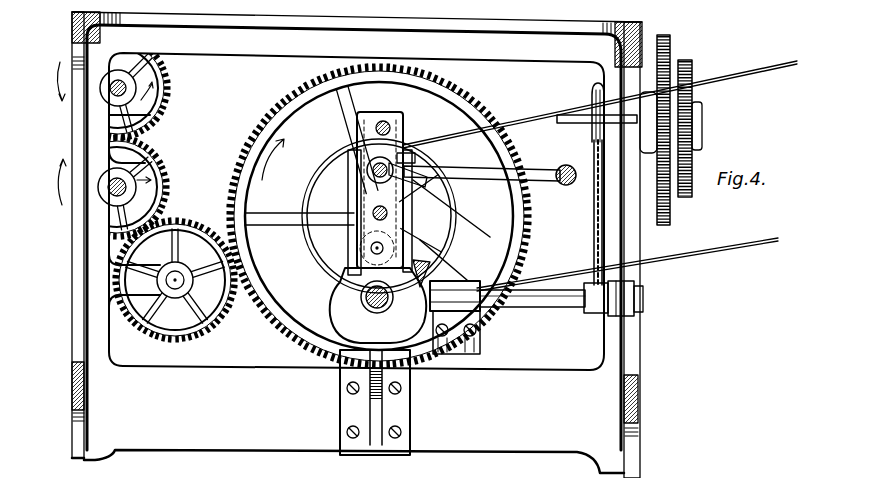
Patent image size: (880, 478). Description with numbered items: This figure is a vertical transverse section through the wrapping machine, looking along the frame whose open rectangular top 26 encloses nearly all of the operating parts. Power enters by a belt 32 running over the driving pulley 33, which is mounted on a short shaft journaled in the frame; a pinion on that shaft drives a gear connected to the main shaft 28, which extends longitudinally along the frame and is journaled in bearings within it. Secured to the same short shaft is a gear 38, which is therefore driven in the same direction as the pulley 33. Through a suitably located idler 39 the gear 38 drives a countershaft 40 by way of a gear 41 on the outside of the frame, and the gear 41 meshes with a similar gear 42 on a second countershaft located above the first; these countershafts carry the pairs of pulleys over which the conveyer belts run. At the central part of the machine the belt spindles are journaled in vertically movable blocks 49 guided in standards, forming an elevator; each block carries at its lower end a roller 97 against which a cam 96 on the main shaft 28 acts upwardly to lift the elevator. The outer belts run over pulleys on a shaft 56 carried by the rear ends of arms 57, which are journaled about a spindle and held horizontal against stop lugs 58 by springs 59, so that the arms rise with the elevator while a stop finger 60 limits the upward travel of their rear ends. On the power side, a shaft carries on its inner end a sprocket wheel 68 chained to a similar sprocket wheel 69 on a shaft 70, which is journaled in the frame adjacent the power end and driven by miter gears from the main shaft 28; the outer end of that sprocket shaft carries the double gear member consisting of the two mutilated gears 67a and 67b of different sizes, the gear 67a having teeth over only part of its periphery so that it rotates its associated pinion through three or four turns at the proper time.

The open rectangular top 26 is at (343, 245).
The gear 41 is at (158, 156).
The countershaft 40 is at (124, 188).
The idler 39 is at (213, 318).
The gear 38 is at (262, 222).
The driving pulley 33 is at (446, 246).
The vertically movable blocks 49 is at (362, 146).
The stop lugs 58 is at (404, 142).
The roller 97 is at (362, 250).
The springs 59 is at (422, 178).
The arms 57 is at (482, 178).
The shaft 56 is at (567, 186).
The mutilated gear 67b is at (690, 68).
The mutilated gear 67a is at (669, 214).
The stop finger 60 is at (560, 116).
The sprocket wheel 68 is at (595, 95).
The sprocket wheel 69 is at (592, 330).
The shaft 70 is at (550, 300).
The belt 32 is at (686, 255).
The cams 96 is at (378, 361).
The main shaft 28 is at (361, 295).
The gear 42 is at (529, 469).